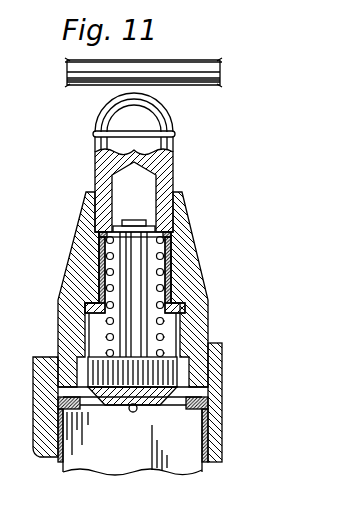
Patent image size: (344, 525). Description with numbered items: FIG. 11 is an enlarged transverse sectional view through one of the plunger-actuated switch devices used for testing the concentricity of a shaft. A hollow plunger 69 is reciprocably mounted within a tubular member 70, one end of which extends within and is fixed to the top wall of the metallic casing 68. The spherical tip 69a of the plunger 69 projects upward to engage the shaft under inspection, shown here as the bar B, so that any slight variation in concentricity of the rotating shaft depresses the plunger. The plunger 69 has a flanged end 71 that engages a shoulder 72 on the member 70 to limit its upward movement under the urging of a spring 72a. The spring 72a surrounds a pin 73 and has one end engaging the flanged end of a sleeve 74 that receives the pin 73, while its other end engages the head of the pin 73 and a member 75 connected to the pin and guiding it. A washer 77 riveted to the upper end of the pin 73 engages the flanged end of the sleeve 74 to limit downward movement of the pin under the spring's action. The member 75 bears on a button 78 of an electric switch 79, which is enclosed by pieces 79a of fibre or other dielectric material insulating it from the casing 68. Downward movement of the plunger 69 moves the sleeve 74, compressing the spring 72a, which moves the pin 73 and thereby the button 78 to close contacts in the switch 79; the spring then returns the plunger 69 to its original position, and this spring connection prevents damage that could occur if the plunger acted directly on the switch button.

The bar B is at (68, 70).
The casing 68 is at (42, 433).
The hollow plunger 69 is at (168, 170).
The spherical tip 69a is at (166, 119).
The tubular member 70 is at (205, 305).
The flanged end 71 is at (82, 306).
The shoulder 72 is at (172, 300).
The spring 72a is at (108, 256).
The pin 73 is at (147, 272).
The sleeve 74 is at (97, 240).
The member 75 is at (62, 390).
The washer 77 is at (158, 231).
The button 78 is at (133, 413).
The electric switch 79 is at (97, 472).
The pieces of fibre 79a is at (58, 460).